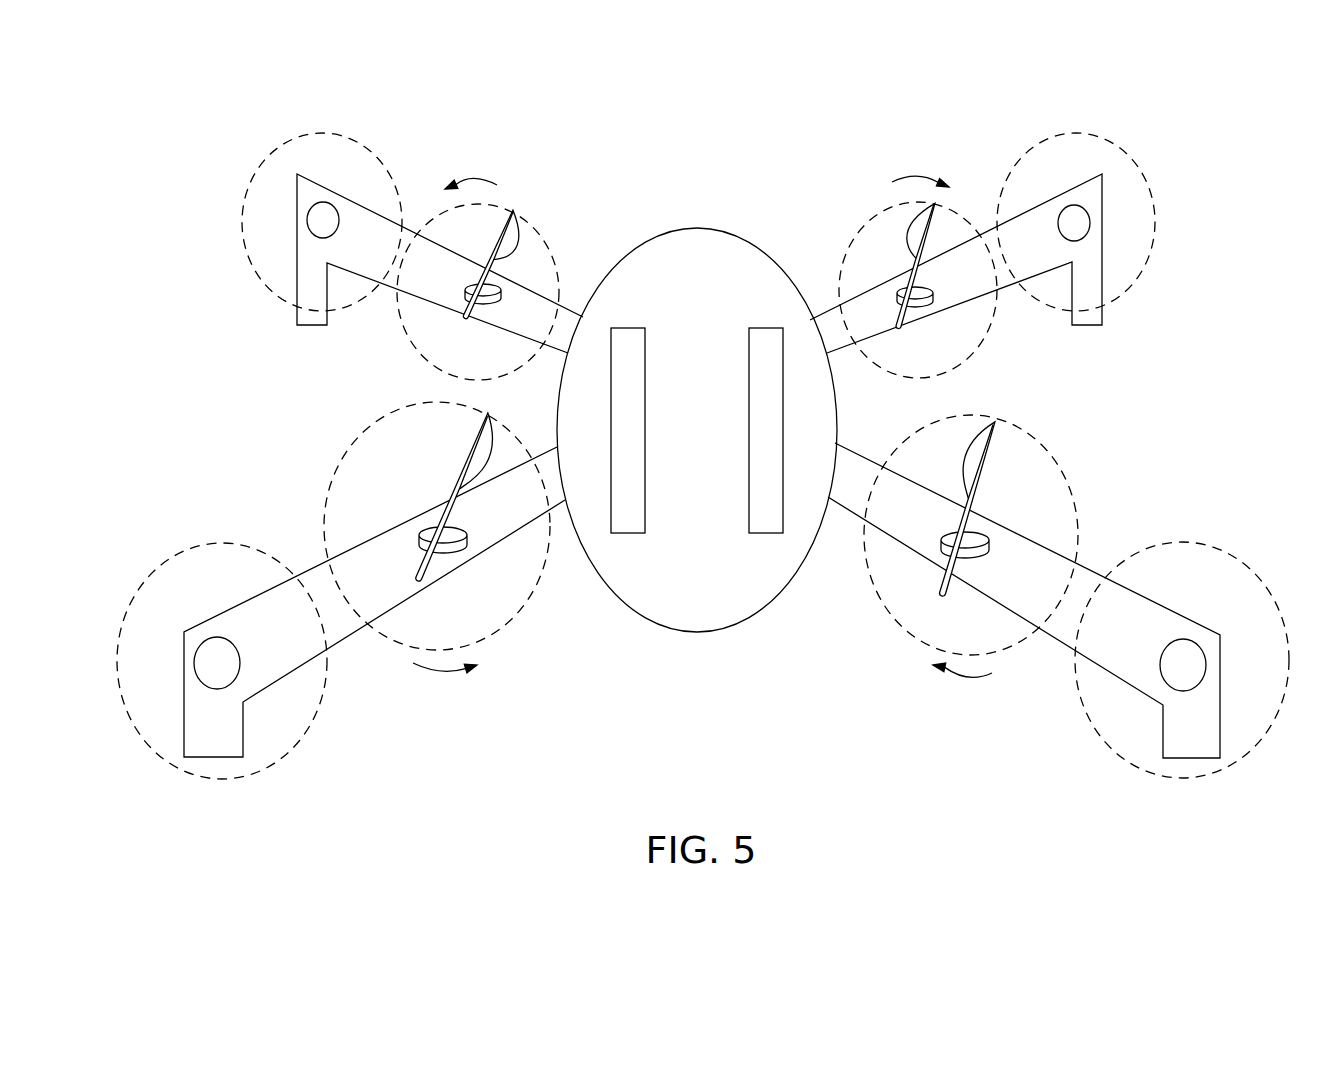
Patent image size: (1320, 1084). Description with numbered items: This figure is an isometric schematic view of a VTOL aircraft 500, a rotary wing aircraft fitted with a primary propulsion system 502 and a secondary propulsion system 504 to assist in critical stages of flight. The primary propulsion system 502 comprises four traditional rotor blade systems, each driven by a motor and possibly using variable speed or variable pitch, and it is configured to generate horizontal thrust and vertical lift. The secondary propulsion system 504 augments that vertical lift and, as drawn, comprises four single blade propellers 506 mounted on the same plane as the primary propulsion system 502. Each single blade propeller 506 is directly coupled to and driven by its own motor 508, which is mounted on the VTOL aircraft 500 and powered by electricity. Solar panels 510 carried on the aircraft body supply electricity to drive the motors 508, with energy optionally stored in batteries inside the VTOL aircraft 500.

The VTOL aircraft 500 is at (226, 127).
The primary propulsion system 502 is at (236, 231).
The secondary propulsion system 504 is at (411, 360).
The single blade propeller 506 is at (514, 211).
The motor 508 is at (492, 290).
The solar panel 510 is at (765, 328).